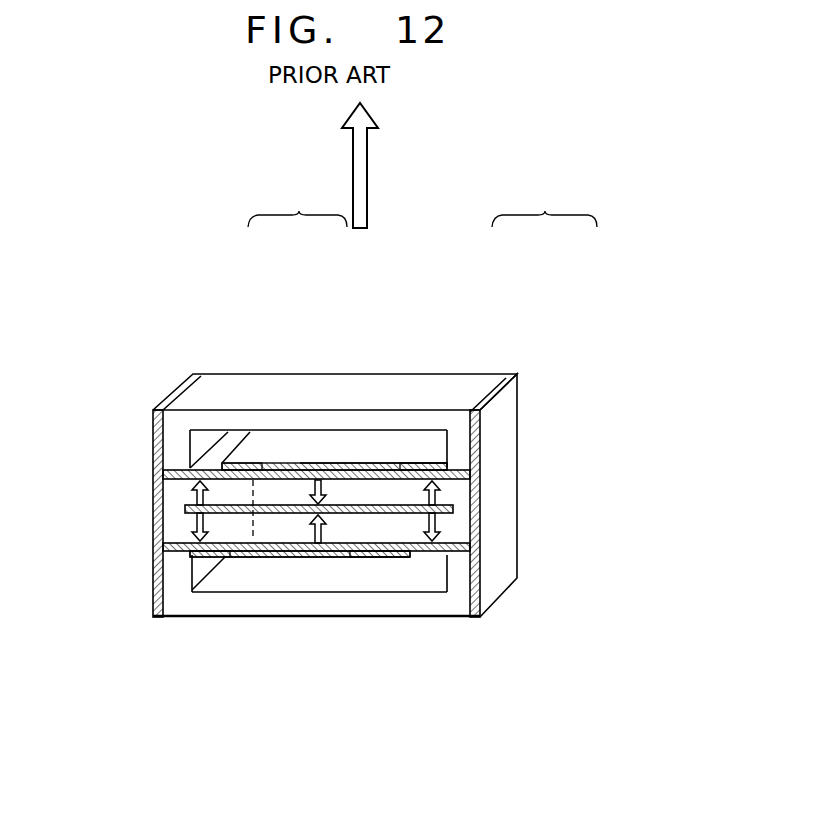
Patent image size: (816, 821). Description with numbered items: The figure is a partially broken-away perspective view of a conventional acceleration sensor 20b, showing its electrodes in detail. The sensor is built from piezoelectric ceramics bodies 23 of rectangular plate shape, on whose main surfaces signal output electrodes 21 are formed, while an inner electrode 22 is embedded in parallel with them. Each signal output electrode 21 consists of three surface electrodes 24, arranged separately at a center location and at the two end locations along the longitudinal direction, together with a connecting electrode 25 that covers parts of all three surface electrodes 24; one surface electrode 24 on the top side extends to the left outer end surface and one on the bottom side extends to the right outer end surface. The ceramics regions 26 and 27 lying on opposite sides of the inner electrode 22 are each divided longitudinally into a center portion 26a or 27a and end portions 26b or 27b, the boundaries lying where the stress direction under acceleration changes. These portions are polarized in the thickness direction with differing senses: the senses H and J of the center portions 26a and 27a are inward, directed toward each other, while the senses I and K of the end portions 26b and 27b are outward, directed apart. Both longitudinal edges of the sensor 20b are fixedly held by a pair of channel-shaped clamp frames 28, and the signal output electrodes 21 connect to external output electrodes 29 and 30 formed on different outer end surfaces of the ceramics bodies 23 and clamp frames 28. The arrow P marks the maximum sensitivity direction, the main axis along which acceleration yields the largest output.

The acceleration sensor 20b is at (168, 352).
The signal output electrodes 21 is at (297, 202).
The inner electrode 22 is at (281, 515).
The piezoelectric ceramics bodies 23 is at (544, 202).
The surface electrodes 24 is at (228, 465).
The connecting electrode 25 is at (328, 440).
The ceramics region 26 is at (400, 476).
The center portion 26a is at (360, 533).
The end portions 26b is at (478, 482).
The ceramics region 27 is at (425, 482).
The center portion 27a is at (362, 560).
The end portions 27b is at (480, 540).
The clamp frames 28 is at (217, 374).
The external output electrode 29 is at (157, 437).
The external output electrode 30 is at (493, 580).
The sense of polarization H is at (348, 468).
The sense of polarization I is at (460, 494).
The sense of polarization J is at (330, 558).
The sense of polarization K is at (460, 526).
The maximum sensitivity direction P is at (370, 158).